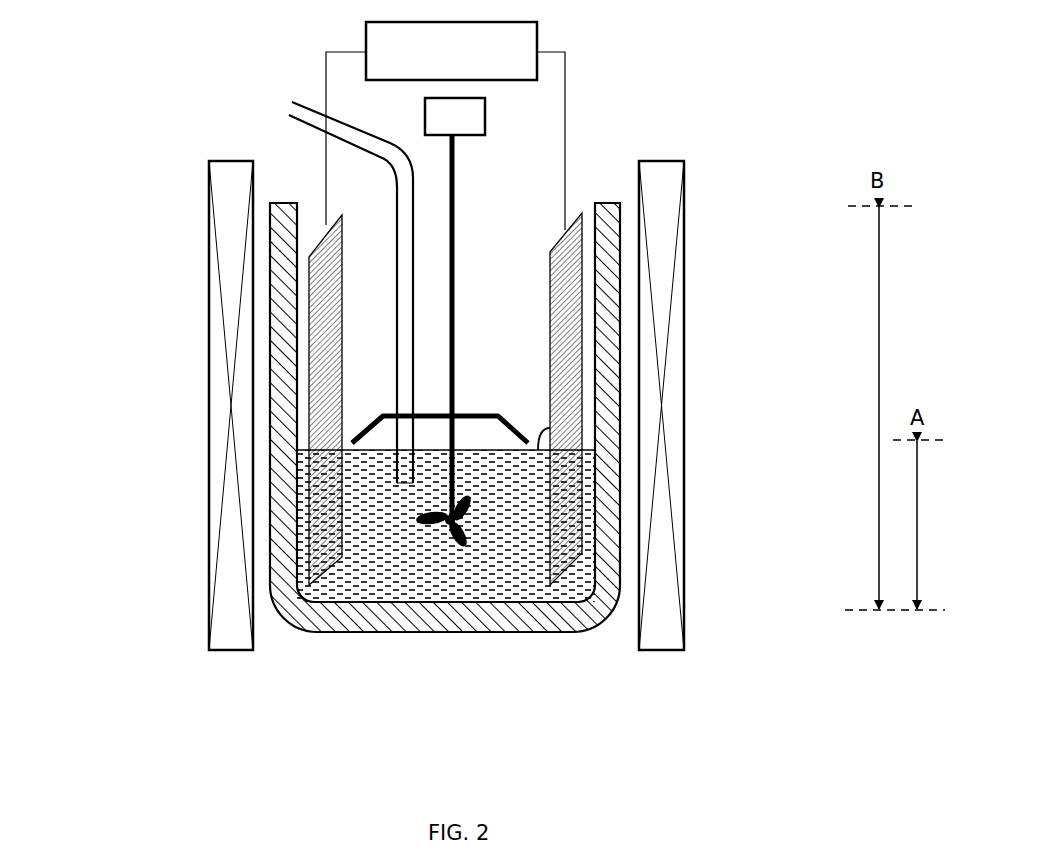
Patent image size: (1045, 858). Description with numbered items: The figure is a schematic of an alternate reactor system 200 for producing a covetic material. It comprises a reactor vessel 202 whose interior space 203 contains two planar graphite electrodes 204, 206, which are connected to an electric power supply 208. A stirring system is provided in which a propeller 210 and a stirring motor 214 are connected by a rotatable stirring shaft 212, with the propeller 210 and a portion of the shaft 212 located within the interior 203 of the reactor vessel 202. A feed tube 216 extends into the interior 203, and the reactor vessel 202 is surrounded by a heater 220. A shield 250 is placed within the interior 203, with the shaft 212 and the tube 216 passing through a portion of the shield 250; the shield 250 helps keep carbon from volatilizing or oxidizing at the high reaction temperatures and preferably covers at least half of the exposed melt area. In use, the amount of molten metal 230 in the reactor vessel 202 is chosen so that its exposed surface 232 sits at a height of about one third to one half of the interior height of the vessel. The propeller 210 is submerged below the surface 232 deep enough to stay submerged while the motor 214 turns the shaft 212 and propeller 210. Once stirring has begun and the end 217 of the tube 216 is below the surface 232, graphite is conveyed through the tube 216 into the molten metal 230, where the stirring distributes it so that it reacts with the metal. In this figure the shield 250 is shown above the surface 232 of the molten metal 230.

The reactor system 200 is at (126, 206).
The reactor vessel 202 is at (537, 633).
The interior space 203 is at (511, 327).
The planar graphite electrode 204 is at (325, 400).
The planar graphite electrode 206 is at (560, 362).
The electric power supply 208 is at (377, 46).
The propeller 210 is at (452, 540).
The rotatable stirring shaft 212 is at (456, 187).
The stirring motor 214 is at (480, 115).
The feed tube 216 is at (400, 190).
The end of tube 217 is at (397, 482).
The heater 220 is at (220, 312).
The molten metal 230 is at (525, 515).
The exposed surface 232 is at (548, 428).
The shield 250 is at (362, 437).